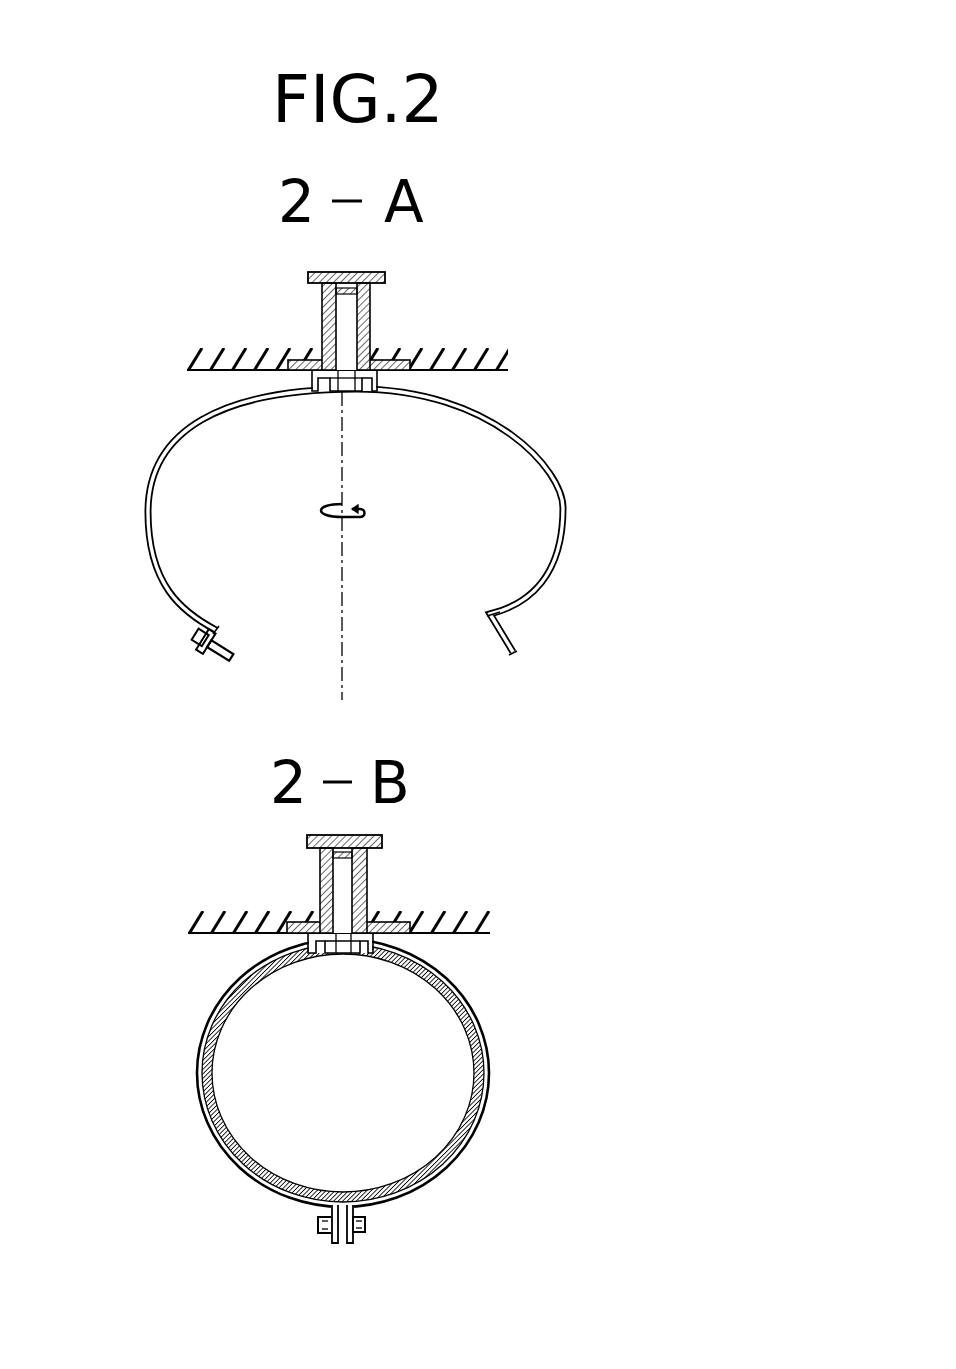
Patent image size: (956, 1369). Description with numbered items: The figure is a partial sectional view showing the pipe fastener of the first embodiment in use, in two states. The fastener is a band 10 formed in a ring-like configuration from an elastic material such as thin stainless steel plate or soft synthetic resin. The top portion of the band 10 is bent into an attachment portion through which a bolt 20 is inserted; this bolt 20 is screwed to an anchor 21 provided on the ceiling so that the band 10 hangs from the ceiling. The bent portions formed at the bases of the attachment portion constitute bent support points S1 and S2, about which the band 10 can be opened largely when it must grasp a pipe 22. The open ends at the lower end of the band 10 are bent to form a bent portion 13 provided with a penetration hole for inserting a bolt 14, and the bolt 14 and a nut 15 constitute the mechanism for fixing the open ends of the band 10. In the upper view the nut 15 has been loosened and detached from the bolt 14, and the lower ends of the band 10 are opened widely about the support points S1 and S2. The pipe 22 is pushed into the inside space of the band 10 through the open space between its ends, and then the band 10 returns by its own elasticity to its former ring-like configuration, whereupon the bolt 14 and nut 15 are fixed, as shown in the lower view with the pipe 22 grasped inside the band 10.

The band 10 is at (143, 497).
The bent portion 13 is at (508, 641).
The bolt 14 is at (194, 644).
The nut 15 is at (365, 1227).
The bolt 20 is at (349, 338).
The anchor 21 is at (386, 280).
The pipe 22 is at (490, 1085).
The bent support point S1 is at (315, 393).
The bent support point S2 is at (378, 393).